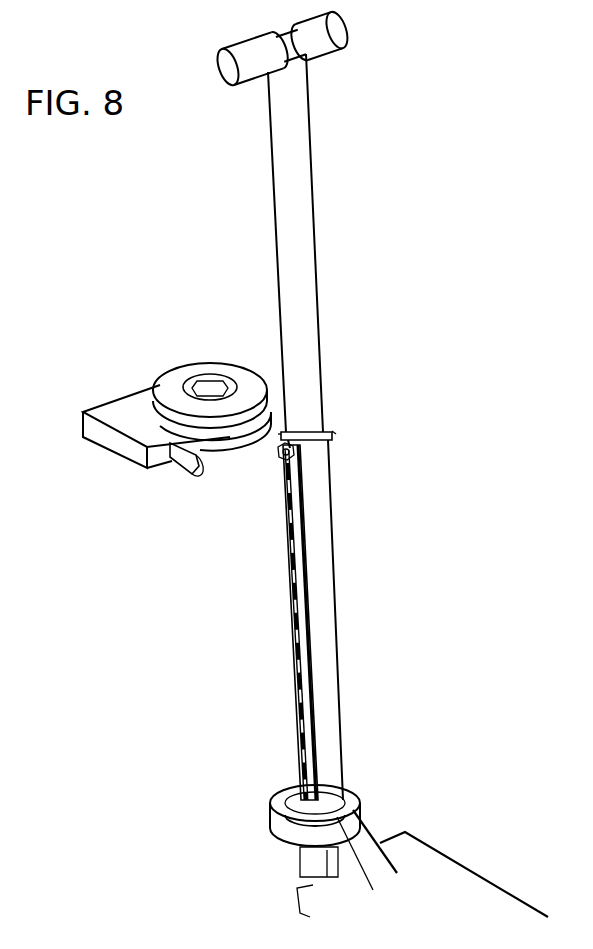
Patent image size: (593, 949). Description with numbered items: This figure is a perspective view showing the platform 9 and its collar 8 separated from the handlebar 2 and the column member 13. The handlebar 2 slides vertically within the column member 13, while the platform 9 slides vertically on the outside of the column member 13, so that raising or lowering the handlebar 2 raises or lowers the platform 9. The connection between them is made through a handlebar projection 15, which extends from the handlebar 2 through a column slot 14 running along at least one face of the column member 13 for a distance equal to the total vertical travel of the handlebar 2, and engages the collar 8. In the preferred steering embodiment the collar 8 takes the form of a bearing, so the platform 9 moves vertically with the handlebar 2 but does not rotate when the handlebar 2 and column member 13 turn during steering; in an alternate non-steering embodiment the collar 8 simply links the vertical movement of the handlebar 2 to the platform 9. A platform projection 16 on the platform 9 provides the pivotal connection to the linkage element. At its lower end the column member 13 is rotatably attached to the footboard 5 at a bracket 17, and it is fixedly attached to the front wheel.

The handlebar 2 is at (280, 108).
The footboard 5 is at (424, 887).
The collar 8 is at (240, 380).
The platform 9 is at (130, 418).
The column member 13 is at (316, 515).
The column slot 14 is at (300, 648).
The handlebar projection 15 is at (284, 458).
The platform projection 16 is at (145, 467).
The bracket 17 is at (313, 838).